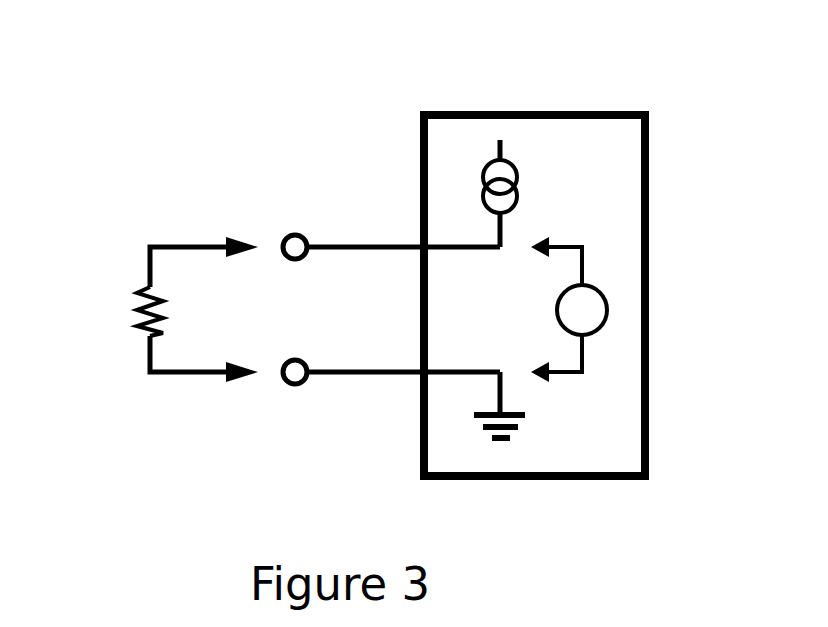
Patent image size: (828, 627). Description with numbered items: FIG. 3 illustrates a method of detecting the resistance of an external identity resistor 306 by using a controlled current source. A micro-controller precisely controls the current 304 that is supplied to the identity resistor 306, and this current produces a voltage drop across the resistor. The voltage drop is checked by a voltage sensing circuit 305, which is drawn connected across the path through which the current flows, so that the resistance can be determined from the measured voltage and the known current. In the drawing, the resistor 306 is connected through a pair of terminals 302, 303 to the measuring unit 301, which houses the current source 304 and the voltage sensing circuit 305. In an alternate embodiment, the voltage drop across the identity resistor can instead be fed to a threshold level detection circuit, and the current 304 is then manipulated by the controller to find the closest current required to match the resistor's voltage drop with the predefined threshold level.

The measurement unit / housing 301 is at (595, 145).
The first terminal 302 is at (389, 244).
The second terminal 303 is at (393, 376).
The current 304 is at (482, 182).
The voltage sensing circuit 305 is at (600, 325).
The external resistor 306 is at (142, 324).